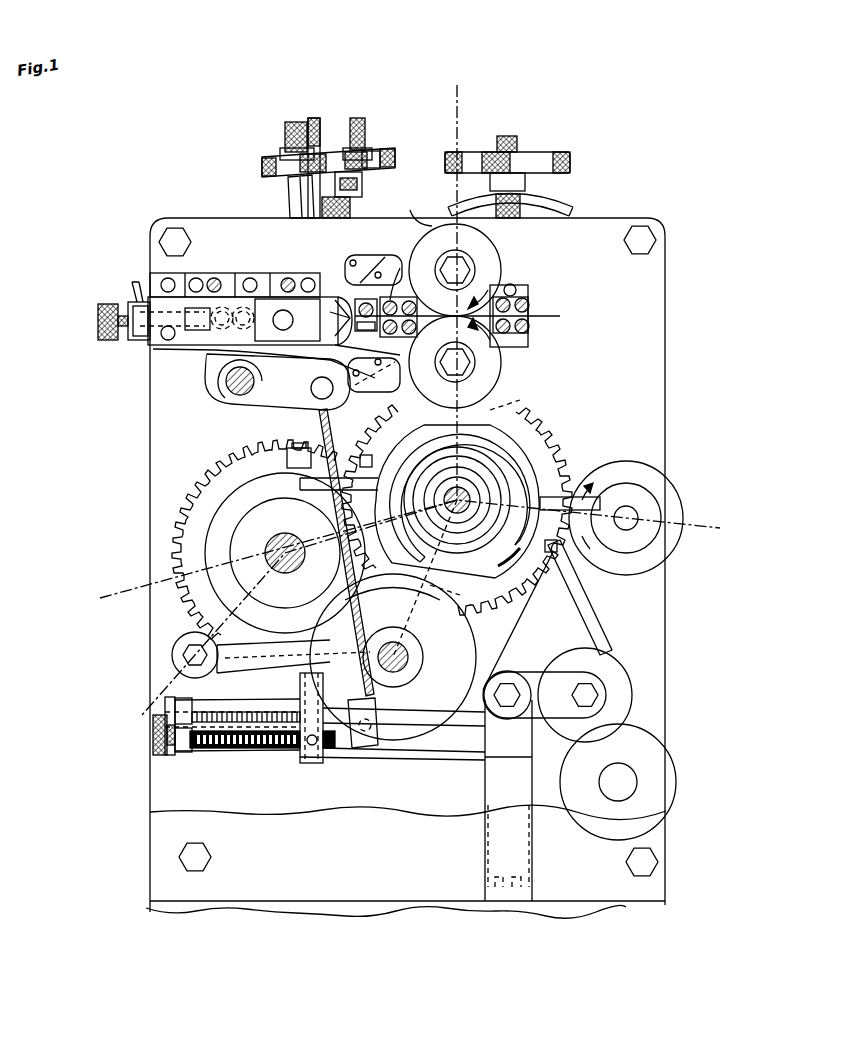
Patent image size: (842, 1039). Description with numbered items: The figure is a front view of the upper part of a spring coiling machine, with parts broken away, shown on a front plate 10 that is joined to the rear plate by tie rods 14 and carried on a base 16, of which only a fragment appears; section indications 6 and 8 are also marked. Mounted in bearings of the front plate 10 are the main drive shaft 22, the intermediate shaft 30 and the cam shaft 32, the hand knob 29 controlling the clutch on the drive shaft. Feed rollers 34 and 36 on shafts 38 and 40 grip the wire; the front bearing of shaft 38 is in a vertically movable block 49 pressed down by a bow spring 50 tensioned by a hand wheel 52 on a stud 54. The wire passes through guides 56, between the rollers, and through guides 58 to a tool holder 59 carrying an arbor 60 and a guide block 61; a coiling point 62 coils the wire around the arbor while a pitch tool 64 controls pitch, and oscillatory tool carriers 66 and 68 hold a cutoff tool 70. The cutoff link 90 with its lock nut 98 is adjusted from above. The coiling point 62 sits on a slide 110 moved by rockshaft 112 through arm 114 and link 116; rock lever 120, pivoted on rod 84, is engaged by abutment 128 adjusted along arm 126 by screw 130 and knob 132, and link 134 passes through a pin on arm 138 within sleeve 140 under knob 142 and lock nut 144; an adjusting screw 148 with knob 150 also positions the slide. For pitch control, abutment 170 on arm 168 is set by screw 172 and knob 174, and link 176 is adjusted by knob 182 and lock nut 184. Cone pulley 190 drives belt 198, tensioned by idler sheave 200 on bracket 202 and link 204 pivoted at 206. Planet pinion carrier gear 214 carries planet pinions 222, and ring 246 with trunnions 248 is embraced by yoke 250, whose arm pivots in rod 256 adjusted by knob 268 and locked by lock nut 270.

The section line 6- 6 is at (448, 100).
The section line 8- 8 is at (103, 596).
The front plate 10 is at (666, 318).
The tie rods 14 is at (174, 238).
The base 16 is at (667, 905).
The main drive shaft 22 is at (405, 658).
The hand knob 29 is at (650, 752).
The intermediate shaft 30 is at (470, 492).
The cam shaft 32 is at (285, 533).
The feed roller 34 is at (469, 270).
The feed roller 36 is at (470, 362).
The feed roller shaft 38 is at (460, 265).
The feed roller shaft 40 is at (461, 372).
The block 49 is at (415, 206).
The bow spring 50 is at (546, 204).
The hand wheel 52 is at (524, 151).
The stud 54 is at (517, 140).
The guides 56 is at (530, 312).
The guides 58 is at (396, 300).
The tool holder 59 is at (365, 316).
The arbor 60 is at (372, 332).
The guide block 61 is at (400, 266).
The coiling point 62 is at (344, 308).
The pitch tool 64 is at (408, 336).
The tool carrier 66 is at (358, 256).
The tool carrier 68 is at (376, 378).
The cutoff tool 70 is at (345, 348).
The pivot rod 84 is at (186, 650).
The link 90 is at (298, 124).
The lock nut 98 is at (318, 150).
The slide 110 is at (225, 296).
The rockshaft 112 is at (236, 390).
The arm 114 is at (205, 356).
The link 116 is at (232, 320).
The rock lever 120 is at (270, 704).
The arm 126 is at (262, 752).
The abutment 128 is at (323, 695).
The screw 130 is at (222, 750).
The knob 132 is at (160, 757).
The link 134 is at (324, 410).
The arm 138 is at (277, 388).
The sleeve 140 is at (292, 207).
The knob 142 is at (324, 159).
The lock nut 144 is at (280, 153).
The adjusting screw 148 is at (136, 340).
The knob 150 is at (105, 340).
The arm 168 is at (232, 710).
The abutment 170 is at (350, 712).
The screw 172 is at (200, 708).
The knob 174 is at (165, 702).
The link 176 is at (388, 598).
The knob 182 is at (388, 160).
The lock nut 184 is at (366, 142).
The cone pulley 190 is at (409, 657).
The belt 198 is at (592, 620).
The idler sheave 200 is at (606, 665).
The bracket 202 is at (487, 779).
The link 204 is at (535, 680).
The pivot 206 is at (505, 686).
The planet pinion carrier gear 214 is at (566, 462).
The planet pinions 222 is at (380, 424).
The ring 246 is at (262, 539).
The trunnions 248 is at (450, 495).
The yoke 250 is at (545, 445).
The rod 256 is at (637, 510).
The knob 268 is at (648, 475).
The lock nut 270 is at (644, 506).